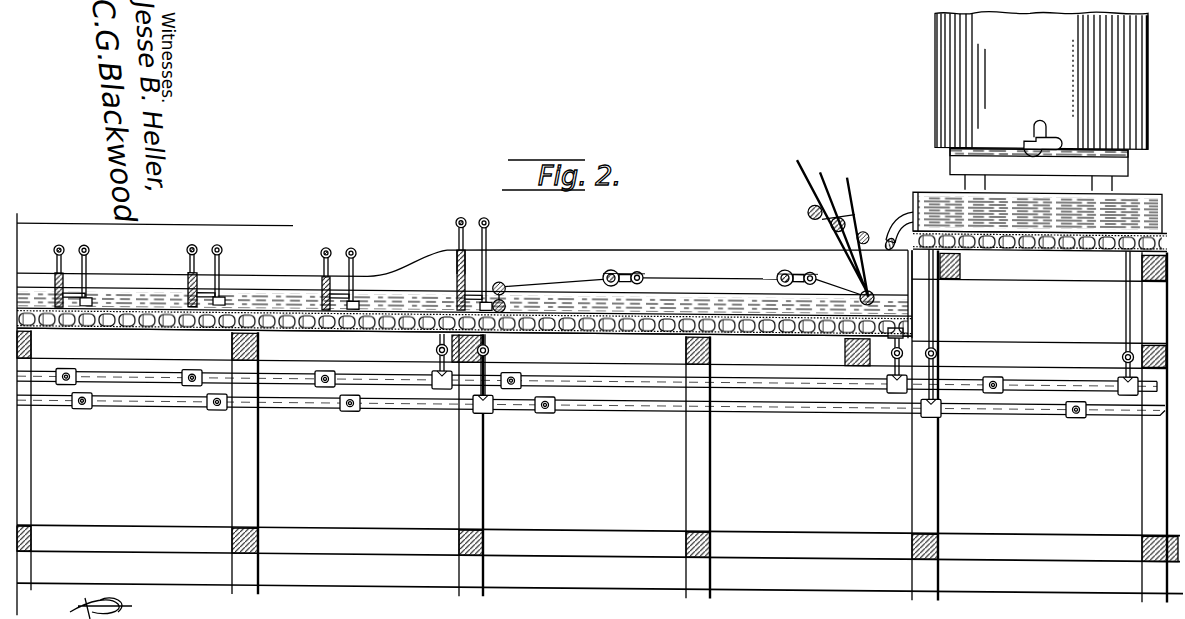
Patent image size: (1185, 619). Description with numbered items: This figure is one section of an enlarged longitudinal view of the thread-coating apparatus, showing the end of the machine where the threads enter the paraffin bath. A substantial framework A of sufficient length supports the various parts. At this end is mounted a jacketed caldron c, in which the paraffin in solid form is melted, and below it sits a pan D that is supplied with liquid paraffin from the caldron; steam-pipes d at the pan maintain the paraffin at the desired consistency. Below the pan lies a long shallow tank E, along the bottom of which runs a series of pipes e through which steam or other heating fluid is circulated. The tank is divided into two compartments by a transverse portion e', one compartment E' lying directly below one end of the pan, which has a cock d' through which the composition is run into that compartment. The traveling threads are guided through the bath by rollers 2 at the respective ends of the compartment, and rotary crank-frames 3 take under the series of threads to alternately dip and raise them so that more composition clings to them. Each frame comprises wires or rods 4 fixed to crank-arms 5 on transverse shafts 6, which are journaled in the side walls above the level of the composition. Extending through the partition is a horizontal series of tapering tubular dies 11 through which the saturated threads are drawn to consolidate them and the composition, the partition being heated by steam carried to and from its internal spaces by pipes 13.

The framework A is at (470, 486).
The pipes e is at (464, 332).
The transverse portion e' is at (488, 263).
The tank E is at (523, 232).
The compartment E' is at (756, 278).
The tapering tubular dies 11 is at (64, 289).
The pipes 13 is at (61, 246).
The rollers 2 is at (506, 289).
The rotary crank-frames 3 is at (621, 270).
The wires or rods 4 is at (733, 268).
The crank-arms 5 is at (718, 267).
The transverse shafts 6 is at (695, 270).
The jacketed caldron c is at (1041, 101).
The pan D is at (1134, 200).
The steam-pipes d is at (1040, 279).
The cock d' is at (886, 224).